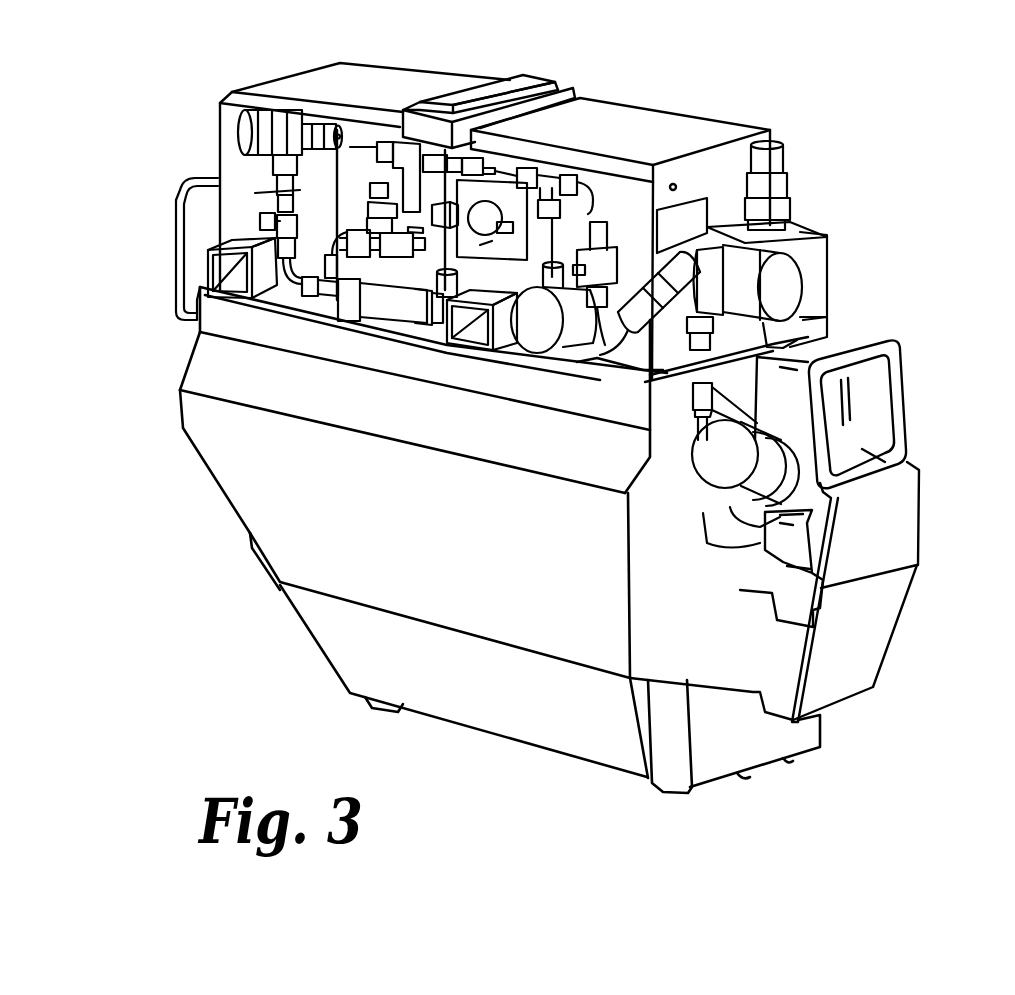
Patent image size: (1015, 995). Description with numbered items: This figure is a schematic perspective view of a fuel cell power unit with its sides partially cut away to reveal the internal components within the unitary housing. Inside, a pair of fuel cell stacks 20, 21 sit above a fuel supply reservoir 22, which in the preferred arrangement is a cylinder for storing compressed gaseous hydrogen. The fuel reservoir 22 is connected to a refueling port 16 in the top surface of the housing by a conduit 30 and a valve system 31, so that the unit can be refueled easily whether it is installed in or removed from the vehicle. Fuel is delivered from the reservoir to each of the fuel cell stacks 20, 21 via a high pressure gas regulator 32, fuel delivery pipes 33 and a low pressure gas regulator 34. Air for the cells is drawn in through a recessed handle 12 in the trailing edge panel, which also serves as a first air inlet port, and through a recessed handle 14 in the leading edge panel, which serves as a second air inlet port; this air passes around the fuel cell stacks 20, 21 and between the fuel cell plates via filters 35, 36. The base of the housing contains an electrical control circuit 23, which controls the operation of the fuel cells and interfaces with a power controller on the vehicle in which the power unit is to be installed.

The recessed handle 12 is at (853, 450).
The recessed handle 14 is at (183, 293).
The refueling port 16 is at (774, 185).
The fuel cell stack 20 is at (355, 142).
The fuel cell stack 21 is at (700, 187).
The fuel supply reservoir 22 is at (690, 557).
The electrical control circuit 23 is at (355, 667).
The conduit 30 is at (773, 210).
The valve system 31 is at (733, 458).
The high pressure gas regulator 32 is at (793, 287).
The fuel delivery pipes 33 is at (327, 293).
The low pressure gas regulator 34 is at (245, 124).
The filter 35 is at (403, 82).
The filter 36 is at (625, 120).